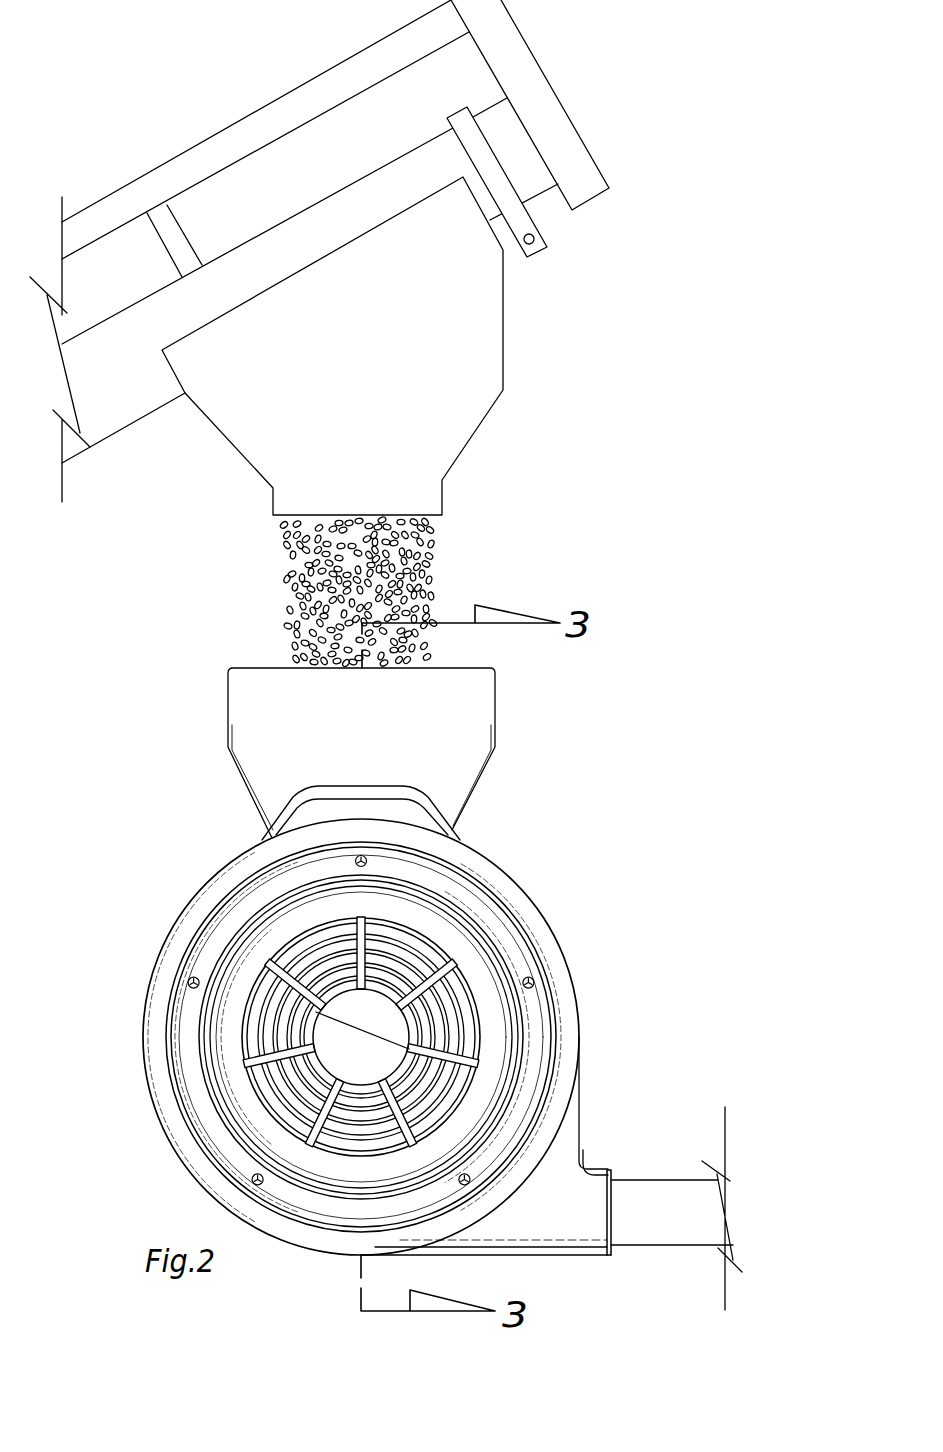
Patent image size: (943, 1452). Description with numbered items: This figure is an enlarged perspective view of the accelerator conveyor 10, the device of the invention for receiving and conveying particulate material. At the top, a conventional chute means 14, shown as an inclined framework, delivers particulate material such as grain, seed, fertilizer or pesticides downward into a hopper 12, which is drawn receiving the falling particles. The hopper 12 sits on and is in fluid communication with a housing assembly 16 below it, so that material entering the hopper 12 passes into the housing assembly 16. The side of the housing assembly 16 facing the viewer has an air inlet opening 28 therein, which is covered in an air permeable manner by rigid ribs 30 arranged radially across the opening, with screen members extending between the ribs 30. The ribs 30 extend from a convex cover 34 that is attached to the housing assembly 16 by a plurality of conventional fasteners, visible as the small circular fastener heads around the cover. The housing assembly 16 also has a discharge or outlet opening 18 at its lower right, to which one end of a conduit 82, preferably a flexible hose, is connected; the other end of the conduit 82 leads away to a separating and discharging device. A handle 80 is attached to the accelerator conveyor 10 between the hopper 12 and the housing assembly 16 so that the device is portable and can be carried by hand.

The accelerator conveyor 10 is at (176, 916).
The hopper 12 is at (228, 697).
The chute means 14 is at (246, 455).
The housing assembly 16 is at (547, 920).
The discharge or outlet opening 18 is at (604, 1170).
The air inlet opening 28 is at (255, 975).
The rigid ribs 30 is at (285, 1040).
The convex cover 34 is at (538, 1042).
The handle 80 is at (373, 790).
The conduit 82 is at (652, 1186).